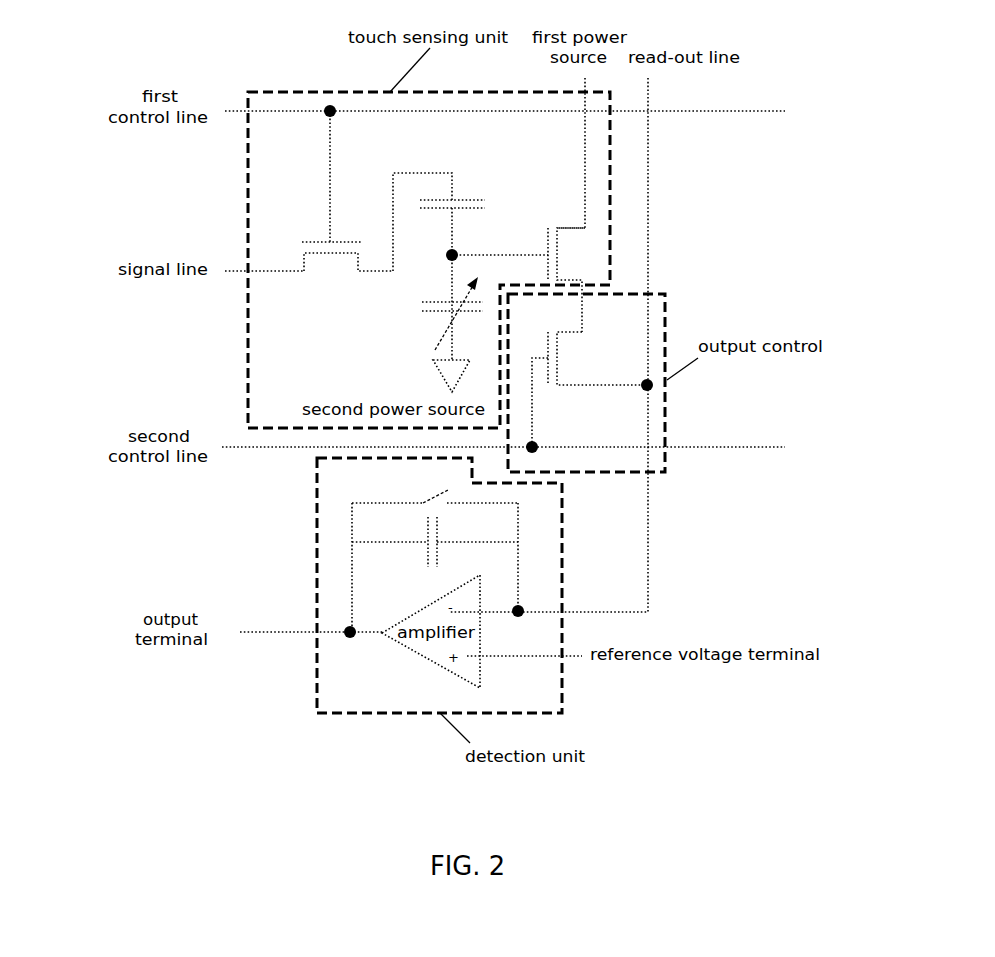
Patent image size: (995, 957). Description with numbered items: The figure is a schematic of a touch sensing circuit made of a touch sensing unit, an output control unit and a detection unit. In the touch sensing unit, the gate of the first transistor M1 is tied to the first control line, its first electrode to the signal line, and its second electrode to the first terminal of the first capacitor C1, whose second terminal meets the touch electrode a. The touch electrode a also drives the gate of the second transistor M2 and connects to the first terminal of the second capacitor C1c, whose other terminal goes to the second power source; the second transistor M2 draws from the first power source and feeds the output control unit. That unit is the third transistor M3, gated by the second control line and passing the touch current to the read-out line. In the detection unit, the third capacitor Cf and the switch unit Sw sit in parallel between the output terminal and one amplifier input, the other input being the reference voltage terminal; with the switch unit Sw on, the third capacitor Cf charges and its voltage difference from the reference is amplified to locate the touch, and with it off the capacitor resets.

The first transistor M1 is at (335, 191).
The second transistor M2 is at (559, 269).
The third transistor M3 is at (587, 376).
The first capacitor C1 is at (439, 221).
The second capacitor C1c is at (456, 323).
The touch electrode a is at (484, 257).
The switch unit Sw is at (435, 490).
The third capacitor Cf is at (435, 542).